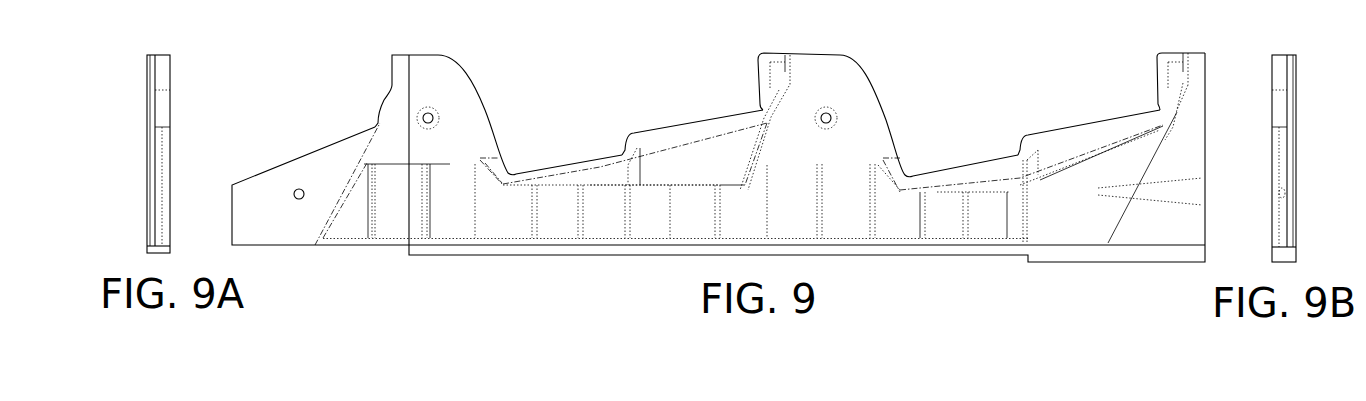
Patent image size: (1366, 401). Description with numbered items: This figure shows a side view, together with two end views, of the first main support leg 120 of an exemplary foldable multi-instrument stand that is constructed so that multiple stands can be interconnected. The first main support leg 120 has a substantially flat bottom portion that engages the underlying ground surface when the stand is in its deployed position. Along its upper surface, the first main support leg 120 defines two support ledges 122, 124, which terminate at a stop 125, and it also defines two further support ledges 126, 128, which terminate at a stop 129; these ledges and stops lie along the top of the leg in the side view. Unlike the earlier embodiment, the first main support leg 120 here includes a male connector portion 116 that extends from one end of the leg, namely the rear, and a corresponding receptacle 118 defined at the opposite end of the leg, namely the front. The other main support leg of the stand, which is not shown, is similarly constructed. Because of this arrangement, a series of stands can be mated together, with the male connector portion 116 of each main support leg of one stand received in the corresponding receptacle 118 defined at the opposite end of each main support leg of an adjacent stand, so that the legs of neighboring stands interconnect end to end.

In FIG. 9, the male connector portion 116 is at (297, 160).
In FIG. 9, the receptacle 118 is at (1167, 128).
In FIG. 9A, the first main support leg 120 is at (143, 147).
In FIG. 9, the first main support leg 120 is at (947, 250).
In FIG. 9B, the first main support leg 120 is at (1297, 173).
In FIG. 9, the support ledge 122 is at (1110, 118).
In FIG. 9, the support ledge 124 is at (992, 160).
In FIG. 9, the stop 125 is at (1157, 62).
In FIG. 9, the support ledge 126 is at (707, 118).
In FIG. 9, the support ledge 128 is at (598, 158).
In FIG. 9, the stop 129 is at (757, 58).